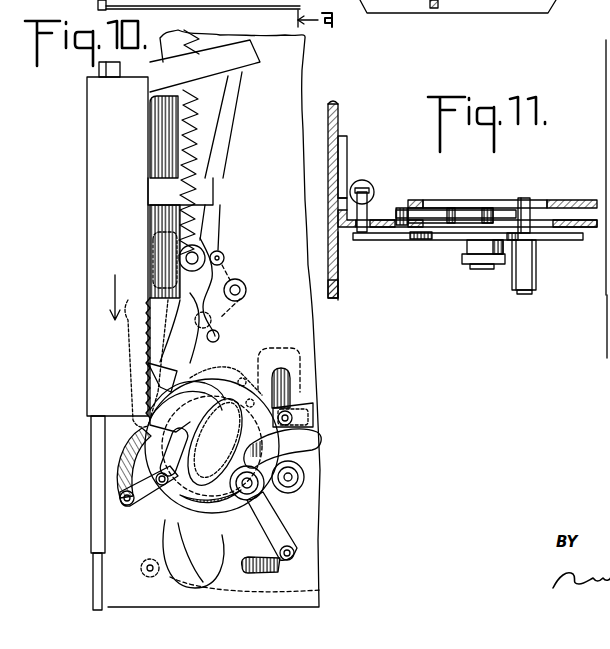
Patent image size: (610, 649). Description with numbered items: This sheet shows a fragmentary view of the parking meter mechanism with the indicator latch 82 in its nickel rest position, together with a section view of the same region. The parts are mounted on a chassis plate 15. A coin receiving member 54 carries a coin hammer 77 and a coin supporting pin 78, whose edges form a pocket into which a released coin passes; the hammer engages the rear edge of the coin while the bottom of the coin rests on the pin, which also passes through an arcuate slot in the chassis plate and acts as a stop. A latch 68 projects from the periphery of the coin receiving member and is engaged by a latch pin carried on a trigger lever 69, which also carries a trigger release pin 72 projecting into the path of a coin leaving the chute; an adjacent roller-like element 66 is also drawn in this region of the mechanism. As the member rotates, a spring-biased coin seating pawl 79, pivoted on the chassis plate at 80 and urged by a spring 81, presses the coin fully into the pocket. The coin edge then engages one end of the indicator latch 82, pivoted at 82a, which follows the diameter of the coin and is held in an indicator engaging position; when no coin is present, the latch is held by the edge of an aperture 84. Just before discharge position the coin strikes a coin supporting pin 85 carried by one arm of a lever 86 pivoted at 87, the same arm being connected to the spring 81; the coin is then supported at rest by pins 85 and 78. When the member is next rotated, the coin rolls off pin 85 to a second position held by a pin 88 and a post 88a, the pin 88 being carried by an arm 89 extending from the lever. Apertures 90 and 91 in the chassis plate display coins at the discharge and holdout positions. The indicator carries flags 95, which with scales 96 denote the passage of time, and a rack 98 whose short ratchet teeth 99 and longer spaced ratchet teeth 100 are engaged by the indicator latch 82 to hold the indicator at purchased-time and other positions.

In FIG. 10, the chassis plate 15 is at (288, 83).
In FIG. 11, the chassis plate 15 is at (343, 234).
In FIG. 10, the coin receiving member 54 is at (214, 558).
In FIG. 11, the coin receiving member 54 is at (562, 202).
In FIG. 10, the roller 66 is at (304, 478).
In FIG. 11, the roller 66 is at (538, 272).
In FIG. 10, the latch 68 is at (276, 348).
In FIG. 10, the trigger lever 69 is at (296, 407).
In FIG. 11, the trigger lever 69 is at (553, 240).
In FIG. 10, the trigger release pin 72 is at (296, 415).
In FIG. 11, the trigger release pin 72 is at (524, 205).
In FIG. 10, the coin hammer 77 is at (234, 372).
In FIG. 10, the coin supporting pin 78 is at (266, 458).
In FIG. 11, the coin supporting pin 78 is at (487, 206).
In FIG. 10, the coin seating pawl 79 is at (222, 313).
In FIG. 10, the pivot 80 is at (244, 287).
In FIG. 11, the spring 81 is at (371, 184).
In FIG. 10, the indicator latch 82 is at (196, 220).
In FIG. 10, the pivot 82a is at (221, 254).
In FIG. 10, the aperture 84 is at (156, 362).
In FIG. 10, the coin supporting pin 85 is at (149, 499).
In FIG. 11, the coin supporting pin 85 is at (404, 240).
In FIG. 10, the lever 86 is at (177, 546).
In FIG. 11, the lever 86 is at (426, 240).
In FIG. 11, the pivot 87 is at (482, 270).
In FIG. 10, the pin 88 is at (288, 562).
In FIG. 10, the post 88a is at (150, 577).
In FIG. 10, the arm 89 is at (278, 528).
In FIG. 10, the aperture 90 is at (212, 388).
In FIG. 10, the aperture 91 is at (160, 543).
In FIG. 10, the flag 95 is at (87, 134).
In FIG. 10, the scale 96 is at (93, 476).
In FIG. 11, the scale 96 is at (330, 102).
In FIG. 10, the rack 98 is at (176, 113).
In FIG. 10, the short ratchet teeth 99 is at (195, 142).
In FIG. 10, the long ratchet teeth 100 is at (198, 172).